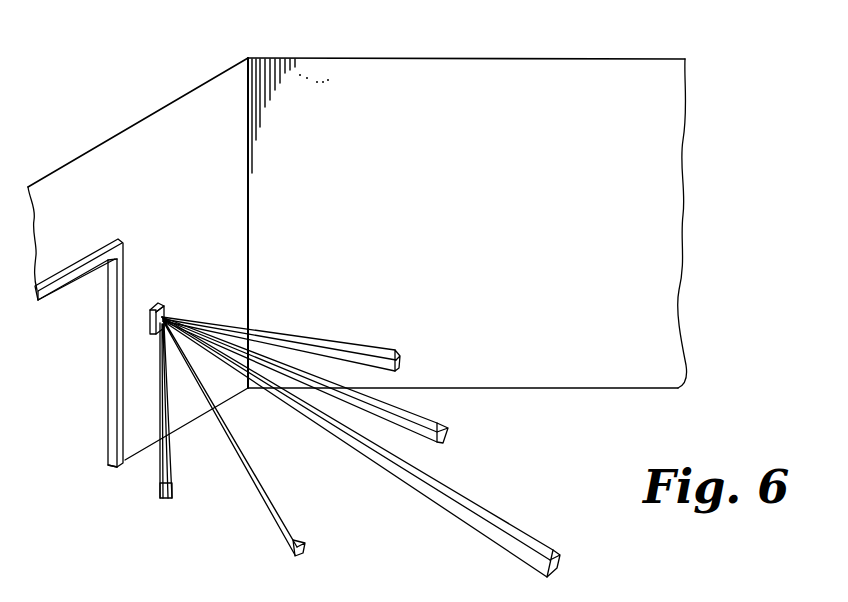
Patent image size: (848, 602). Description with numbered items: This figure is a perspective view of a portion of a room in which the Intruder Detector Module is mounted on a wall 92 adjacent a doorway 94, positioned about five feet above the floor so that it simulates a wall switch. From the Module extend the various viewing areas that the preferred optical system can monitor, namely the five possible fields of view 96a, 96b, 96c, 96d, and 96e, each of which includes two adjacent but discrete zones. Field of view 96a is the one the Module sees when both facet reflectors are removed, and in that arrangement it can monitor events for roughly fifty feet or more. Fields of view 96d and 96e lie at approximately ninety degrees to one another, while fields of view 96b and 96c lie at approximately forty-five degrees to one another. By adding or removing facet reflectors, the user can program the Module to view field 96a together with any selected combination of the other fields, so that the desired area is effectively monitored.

The wall 92 is at (205, 105).
The doorway 94 is at (120, 325).
The field of view 96a is at (548, 548).
The field of view 96b is at (437, 422).
The field of view 96c is at (298, 528).
The field of view 96d is at (377, 348).
The field of view 96e is at (172, 486).